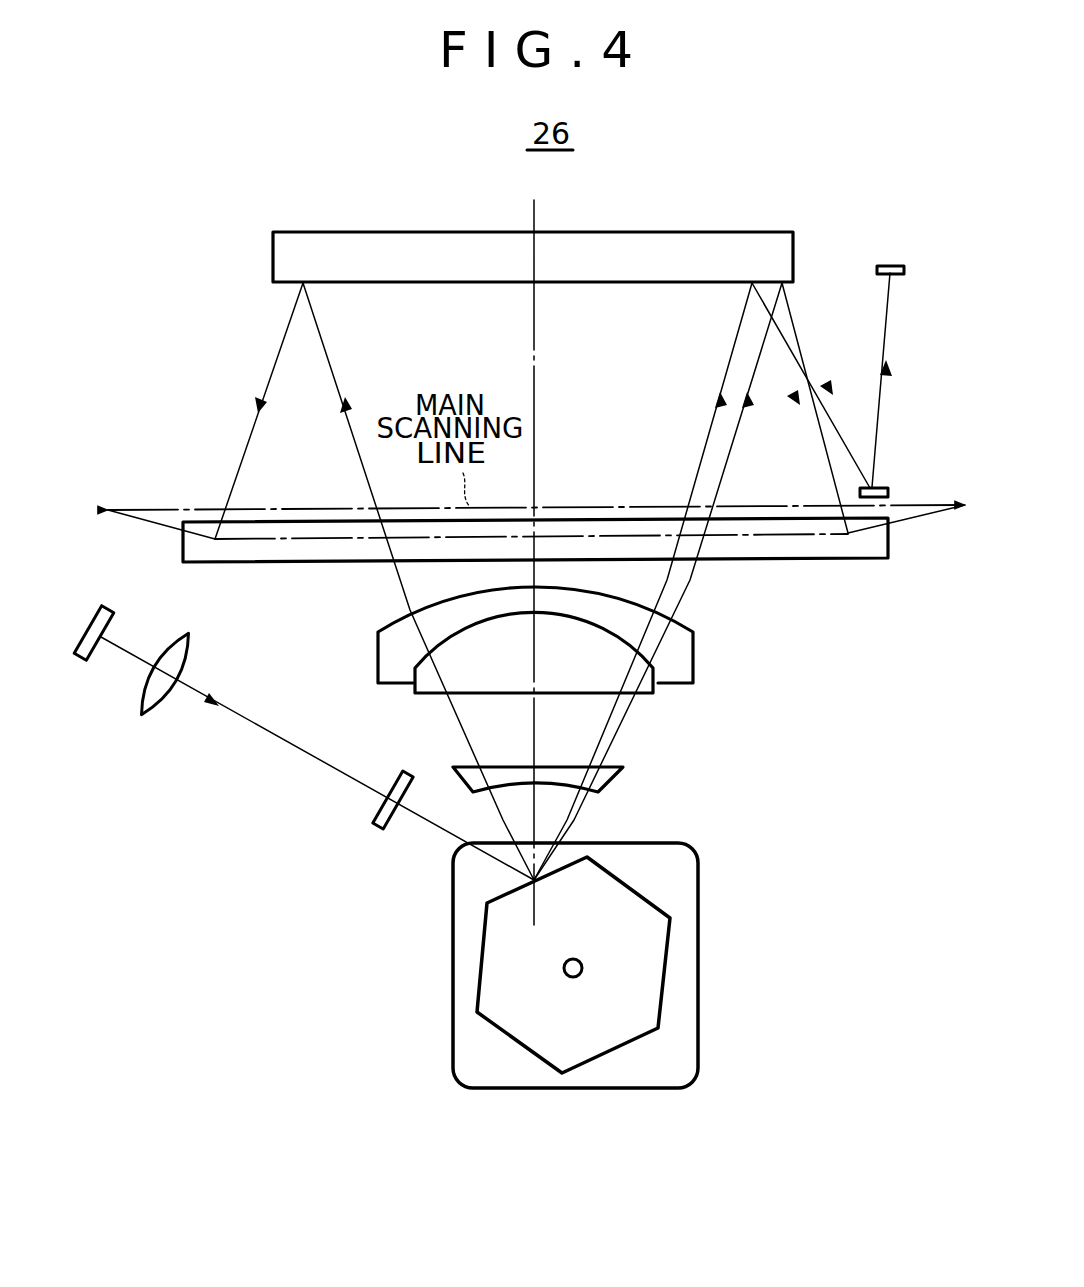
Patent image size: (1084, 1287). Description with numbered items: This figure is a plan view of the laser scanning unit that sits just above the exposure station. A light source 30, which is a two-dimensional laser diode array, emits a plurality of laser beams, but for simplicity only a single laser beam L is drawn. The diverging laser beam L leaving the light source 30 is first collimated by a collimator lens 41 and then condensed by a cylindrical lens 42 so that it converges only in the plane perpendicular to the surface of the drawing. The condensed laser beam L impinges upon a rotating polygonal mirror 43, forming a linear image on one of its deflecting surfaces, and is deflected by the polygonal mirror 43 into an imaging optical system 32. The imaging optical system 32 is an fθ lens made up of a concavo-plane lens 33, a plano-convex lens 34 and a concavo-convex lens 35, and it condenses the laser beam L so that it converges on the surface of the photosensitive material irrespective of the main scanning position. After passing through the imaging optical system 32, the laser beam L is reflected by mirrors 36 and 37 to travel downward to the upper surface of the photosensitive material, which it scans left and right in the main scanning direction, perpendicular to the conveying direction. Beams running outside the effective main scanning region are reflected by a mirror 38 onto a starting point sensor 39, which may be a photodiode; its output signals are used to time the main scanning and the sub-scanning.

The light source 30 is at (88, 662).
The imaging optical system 32 is at (603, 708).
The concavo-plane lens 33 is at (592, 780).
The plano-convex lens 34 is at (658, 693).
The concavo-convex lens 35 is at (693, 638).
The mirror 36 is at (763, 232).
The mirror 37 is at (878, 543).
The mirror 38 is at (888, 493).
The starting point sensor 39 is at (885, 266).
The collimator lens 41 is at (155, 713).
The cylindrical lens 42 is at (380, 832).
The polygonal mirror 43 is at (495, 960).
The laser beam L is at (273, 735).